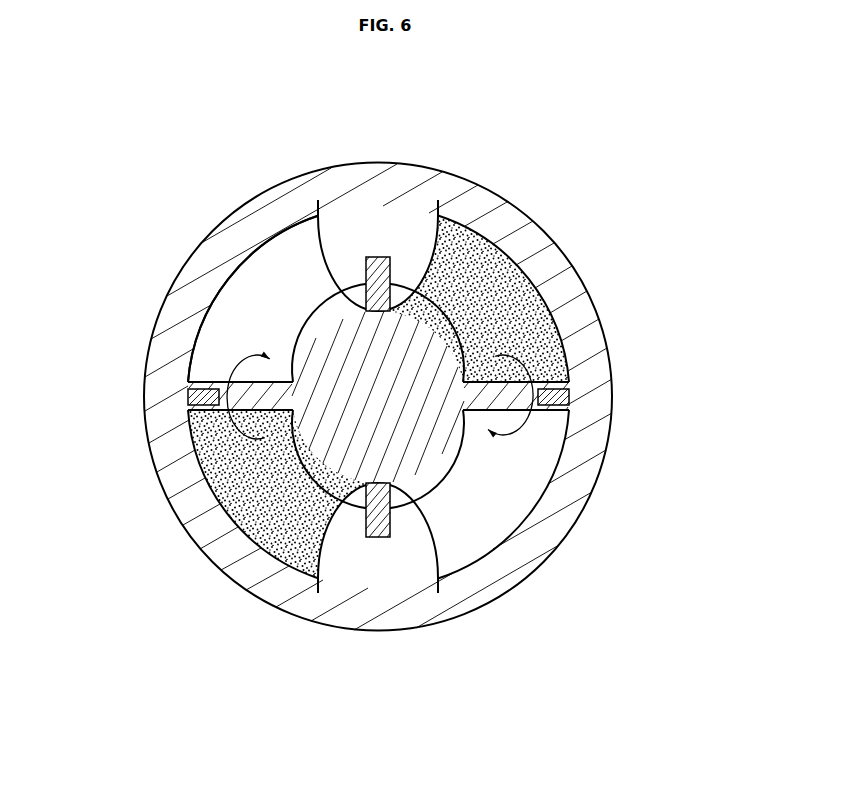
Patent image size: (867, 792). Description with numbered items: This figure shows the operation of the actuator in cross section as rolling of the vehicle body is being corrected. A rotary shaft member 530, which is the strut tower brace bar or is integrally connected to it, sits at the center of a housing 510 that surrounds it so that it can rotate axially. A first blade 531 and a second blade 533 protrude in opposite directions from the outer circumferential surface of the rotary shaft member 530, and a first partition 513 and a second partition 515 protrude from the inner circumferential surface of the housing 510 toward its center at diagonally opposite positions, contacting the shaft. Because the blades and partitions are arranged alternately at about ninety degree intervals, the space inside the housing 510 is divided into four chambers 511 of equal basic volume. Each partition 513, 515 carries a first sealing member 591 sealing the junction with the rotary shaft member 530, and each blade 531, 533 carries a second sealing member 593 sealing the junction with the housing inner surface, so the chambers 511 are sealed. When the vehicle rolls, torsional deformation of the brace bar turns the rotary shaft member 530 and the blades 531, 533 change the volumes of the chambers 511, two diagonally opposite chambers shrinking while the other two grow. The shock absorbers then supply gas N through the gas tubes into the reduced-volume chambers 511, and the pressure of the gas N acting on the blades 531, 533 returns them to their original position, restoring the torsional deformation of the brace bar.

The housing 510 is at (593, 345).
The chamber 511 is at (266, 281).
The first partition 513 is at (392, 220).
The second partition 515 is at (380, 560).
The rotary shaft member 530 is at (459, 453).
The first blade 531 is at (255, 397).
The second blade 533 is at (497, 390).
The first sealing member 591 is at (390, 278).
The second sealing member 593 is at (205, 399).
The gas N is at (290, 492).